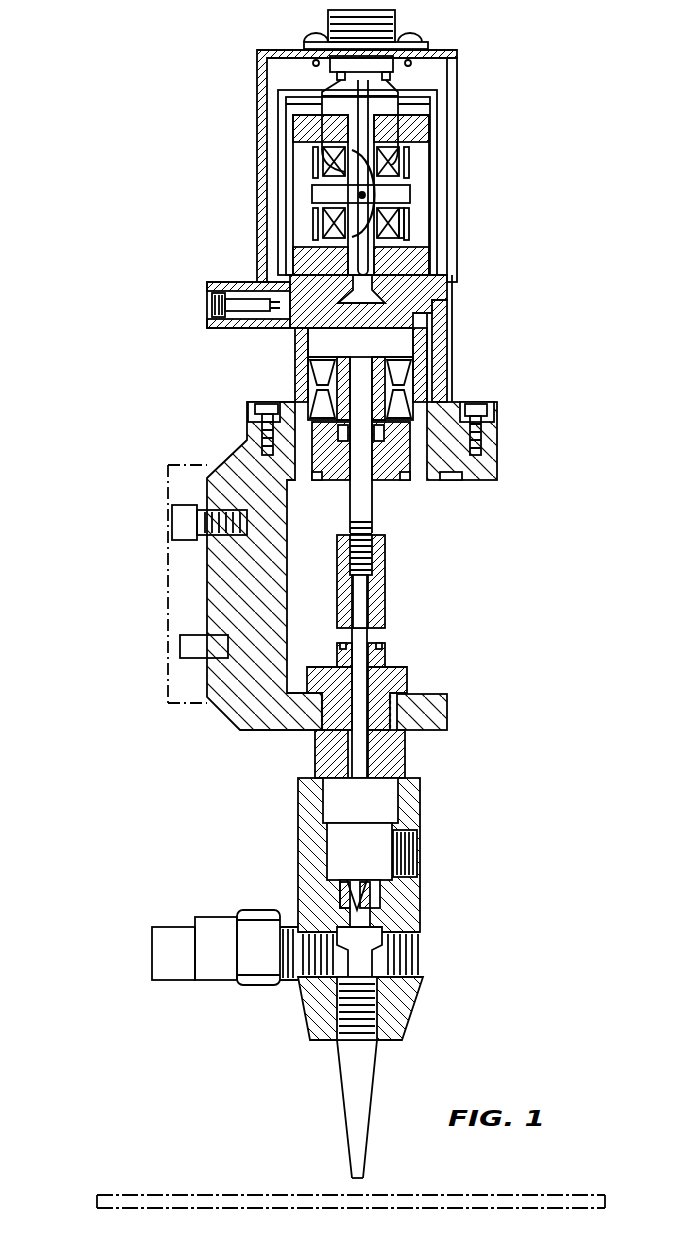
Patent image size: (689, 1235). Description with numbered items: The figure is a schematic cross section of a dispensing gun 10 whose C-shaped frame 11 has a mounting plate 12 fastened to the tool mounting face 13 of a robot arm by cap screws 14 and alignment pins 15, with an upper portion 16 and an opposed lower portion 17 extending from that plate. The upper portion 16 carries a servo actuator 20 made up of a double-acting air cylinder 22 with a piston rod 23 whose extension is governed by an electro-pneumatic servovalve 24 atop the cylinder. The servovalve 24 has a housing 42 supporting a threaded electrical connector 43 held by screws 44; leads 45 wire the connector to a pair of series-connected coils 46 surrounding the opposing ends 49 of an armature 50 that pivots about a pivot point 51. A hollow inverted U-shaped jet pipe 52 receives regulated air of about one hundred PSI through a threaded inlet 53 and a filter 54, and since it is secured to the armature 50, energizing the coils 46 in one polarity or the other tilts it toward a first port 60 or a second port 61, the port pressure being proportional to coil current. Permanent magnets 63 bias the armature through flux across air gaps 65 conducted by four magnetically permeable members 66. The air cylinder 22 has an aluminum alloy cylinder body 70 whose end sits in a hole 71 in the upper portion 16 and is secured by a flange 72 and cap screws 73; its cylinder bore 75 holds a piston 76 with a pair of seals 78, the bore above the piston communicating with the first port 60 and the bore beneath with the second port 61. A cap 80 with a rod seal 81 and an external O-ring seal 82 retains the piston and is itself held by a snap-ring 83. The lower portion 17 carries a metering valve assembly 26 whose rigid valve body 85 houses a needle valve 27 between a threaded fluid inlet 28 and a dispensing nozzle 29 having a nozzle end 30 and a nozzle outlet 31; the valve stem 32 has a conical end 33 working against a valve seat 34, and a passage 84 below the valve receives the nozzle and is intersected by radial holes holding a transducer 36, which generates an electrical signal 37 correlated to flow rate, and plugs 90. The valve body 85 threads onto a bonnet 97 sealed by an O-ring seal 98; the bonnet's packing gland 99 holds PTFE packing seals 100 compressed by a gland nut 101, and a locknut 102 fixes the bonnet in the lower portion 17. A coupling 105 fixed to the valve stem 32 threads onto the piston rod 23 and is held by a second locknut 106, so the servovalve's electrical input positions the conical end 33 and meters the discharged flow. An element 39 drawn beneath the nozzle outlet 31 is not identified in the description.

The dispensing gun 10 is at (115, 599).
The C-shaped frame 11 is at (232, 596).
The mounting plate 12 is at (256, 569).
The tool mounting face 13 is at (168, 712).
The cap screws 14 is at (180, 524).
The alignment pins 15 is at (186, 644).
The upper portion 16 is at (498, 480).
The lower portion 17 is at (448, 704).
The servo actuator 20 is at (545, 271).
The double-acting air cylinder 22 is at (452, 354).
The piston rod 23 is at (373, 527).
The electro-pneumatic servovalve 24 is at (462, 147).
The metering valve assembly 26 is at (452, 887).
The needle valve 27 is at (405, 817).
The fluid inlet 28 is at (418, 859).
The dispensing nozzle 29 is at (410, 1045).
The nozzle end 30 is at (348, 1115).
The nozzle outlet 31 is at (357, 1186).
The valve stem 32 is at (346, 829).
The conical end 33 is at (352, 875).
The valve seat 34 is at (372, 904).
The transducer 36 is at (178, 981).
The electrical signal 37 is at (90, 953).
The workpiece 39 is at (482, 1195).
The housing 42 is at (257, 93).
The electrical connector 43 is at (398, 26).
The screws 44 is at (316, 46).
The leads 45 is at (400, 91).
The coils 46 is at (320, 159).
The opposing ends 49 is at (312, 194).
The armature 50 is at (400, 189).
The pivot point 51 is at (406, 214).
The jet pipe 52 is at (430, 101).
The threaded inlet 53 is at (212, 311).
The filter 54 is at (248, 330).
The first port 60 is at (282, 330).
The second port 61 is at (452, 307).
The permanent magnets 63 is at (440, 146).
The air gaps 65 is at (300, 174).
The magnetically permeable members 66 is at (300, 124).
The cylinder body 70 is at (470, 344).
The hole 71 is at (452, 480).
The flange 72 is at (498, 419).
The cap screws 73 is at (478, 411).
The cylinder bore 75 is at (325, 343).
The piston 76 is at (414, 380).
The seals 78 is at (314, 385).
The cap 80 is at (383, 483).
The seal 81 is at (352, 486).
The O-ring seal 82 is at (432, 489).
The snap-ring 83 is at (322, 488).
The passage 84 is at (350, 984).
The valve body 85 is at (421, 999).
The plugs 90 is at (421, 954).
The bonnet 97 is at (311, 759).
The O-ring seal 98 is at (332, 787).
The packing gland 99 is at (406, 756).
The packing seals 100 is at (318, 744).
The gland nut 101 is at (376, 664).
The locknut 102 is at (410, 677).
The coupling 105 is at (386, 601).
The second locknut 106 is at (386, 547).